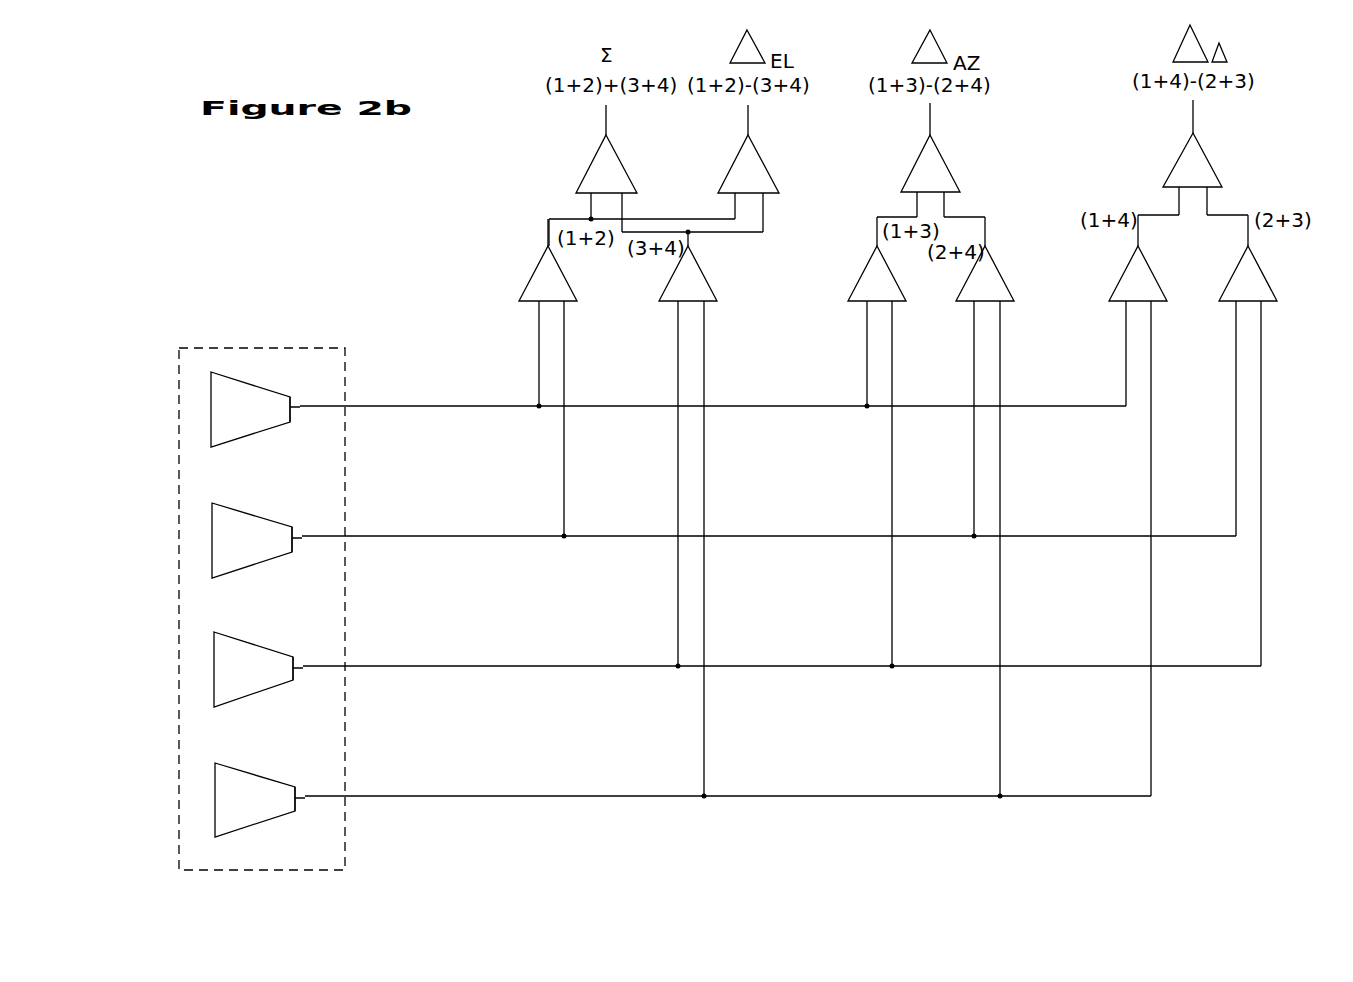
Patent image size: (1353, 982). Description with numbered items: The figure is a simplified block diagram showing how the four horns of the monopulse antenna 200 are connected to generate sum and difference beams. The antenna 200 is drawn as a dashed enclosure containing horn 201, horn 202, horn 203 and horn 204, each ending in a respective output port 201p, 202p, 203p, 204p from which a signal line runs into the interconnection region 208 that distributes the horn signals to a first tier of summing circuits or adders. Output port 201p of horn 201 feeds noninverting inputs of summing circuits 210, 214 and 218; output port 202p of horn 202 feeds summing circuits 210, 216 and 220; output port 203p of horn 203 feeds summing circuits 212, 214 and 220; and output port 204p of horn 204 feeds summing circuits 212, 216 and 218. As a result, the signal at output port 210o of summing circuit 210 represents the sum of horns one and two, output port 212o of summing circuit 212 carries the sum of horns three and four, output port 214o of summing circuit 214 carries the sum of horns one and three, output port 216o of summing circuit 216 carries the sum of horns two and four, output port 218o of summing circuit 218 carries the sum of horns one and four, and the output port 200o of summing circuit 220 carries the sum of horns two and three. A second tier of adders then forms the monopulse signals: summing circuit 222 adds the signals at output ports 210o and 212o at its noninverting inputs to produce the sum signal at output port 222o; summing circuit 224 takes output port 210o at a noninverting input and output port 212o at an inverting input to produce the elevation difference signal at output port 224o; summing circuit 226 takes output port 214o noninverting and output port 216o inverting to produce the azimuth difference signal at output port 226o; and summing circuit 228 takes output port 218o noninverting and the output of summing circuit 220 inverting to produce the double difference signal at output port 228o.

The four horn monopulse antenna 200 is at (347, 853).
The horn 201 is at (228, 447).
The output port of horn 201 201p is at (293, 397).
The horn 202 is at (230, 578).
The output port of horn 202 202p is at (297, 531).
The horn 203 is at (230, 707).
The output port of horn 203 203p is at (302, 661).
The horn 204 is at (232, 837).
The output port of horn 204 204p is at (302, 791).
The combining network 208 is at (778, 851).
The summing circuit 210 is at (525, 313).
The output port of summing circuit 210 210o is at (548, 246).
The summing circuit 212 is at (717, 301).
The output port of summing circuit 212 212o is at (690, 248).
The summing circuit 214 is at (848, 301).
The output port of summing circuit 214 214o is at (876, 246).
The summing circuit 216 is at (1014, 301).
The output port of summing circuit 216 216o is at (987, 248).
The summing circuit 218 is at (1115, 313).
The output port of summing circuit 218 218o is at (1138, 246).
The summing circuit 220 is at (1277, 301).
The output of sixth summing amplifier 200o is at (1250, 248).
The summing circuit 222 is at (576, 193).
The output port of summing circuit 222 222o is at (604, 136).
The summing circuit 224 is at (779, 193).
The output port of summing circuit 224 224o is at (750, 137).
The summing circuit 226 is at (955, 188).
The output port of summing circuit 226 226o is at (932, 136).
The summing circuit 228 is at (1212, 192).
The output port of summing circuit 228 228o is at (1195, 135).